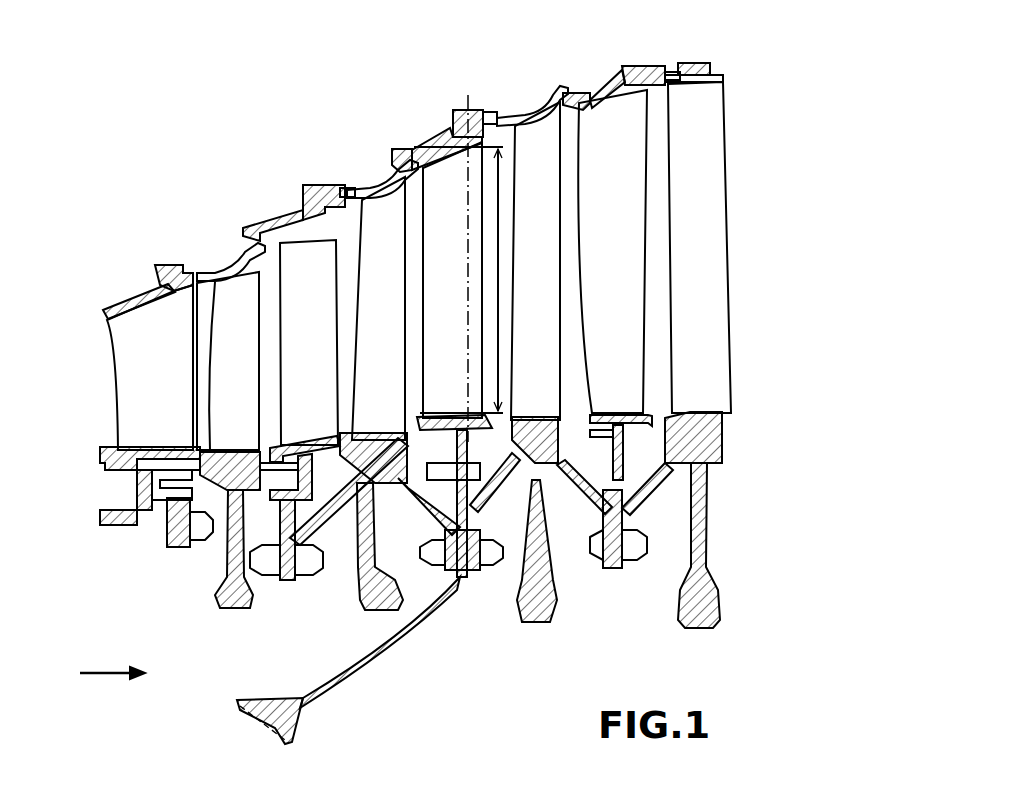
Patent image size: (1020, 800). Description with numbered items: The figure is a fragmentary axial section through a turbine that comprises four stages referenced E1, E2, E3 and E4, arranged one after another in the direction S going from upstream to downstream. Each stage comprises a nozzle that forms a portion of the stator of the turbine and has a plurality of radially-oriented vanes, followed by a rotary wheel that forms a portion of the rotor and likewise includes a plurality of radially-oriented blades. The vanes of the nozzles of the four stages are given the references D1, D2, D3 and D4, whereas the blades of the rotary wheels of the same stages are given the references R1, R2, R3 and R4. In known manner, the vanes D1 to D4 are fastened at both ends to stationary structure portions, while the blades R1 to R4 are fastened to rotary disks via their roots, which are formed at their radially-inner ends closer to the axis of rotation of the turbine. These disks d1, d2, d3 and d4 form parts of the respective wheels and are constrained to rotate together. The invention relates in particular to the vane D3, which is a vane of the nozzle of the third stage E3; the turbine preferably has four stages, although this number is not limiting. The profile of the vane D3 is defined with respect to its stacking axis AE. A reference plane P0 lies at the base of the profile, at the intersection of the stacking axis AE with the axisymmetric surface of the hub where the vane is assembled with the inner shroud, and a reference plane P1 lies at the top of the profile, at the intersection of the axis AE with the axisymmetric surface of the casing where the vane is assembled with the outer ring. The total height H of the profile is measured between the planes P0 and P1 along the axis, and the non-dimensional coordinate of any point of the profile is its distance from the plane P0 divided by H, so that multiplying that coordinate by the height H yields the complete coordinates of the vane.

The first stage E1 is at (103, 241).
The second stage E2 is at (253, 163).
The third stage E3 is at (405, 88).
The fourth stage E4 is at (727, 43).
The vane of the nozzle of the first stage D1 is at (166, 385).
The blade of the rotary wheel of the first stage R1 is at (248, 364).
The vane of the nozzle of the second stage D2 is at (297, 343).
The blade of the rotary wheel of the second stage R2 is at (370, 319).
The vane of the nozzle of the third stage D3 is at (434, 299).
The blade of the rotary wheel of the third stage R3 is at (525, 241).
The vane of the nozzle of the fourth stage D4 is at (602, 252).
The blade of the rotary wheel of the fourth stage R4 is at (687, 229).
The stacking axis AE is at (467, 236).
The reference plane at the top of the profile P1 is at (442, 146).
The reference plane at the base of the profile P0 is at (425, 413).
The total height of the profile H is at (500, 282).
The disk of the first stage d1 is at (227, 477).
The disk of the second stage d2 is at (372, 505).
The disk of the third stage d3 is at (515, 530).
The disk of the fourth stage d4 is at (700, 447).
The direction from upstream to downstream S is at (112, 664).